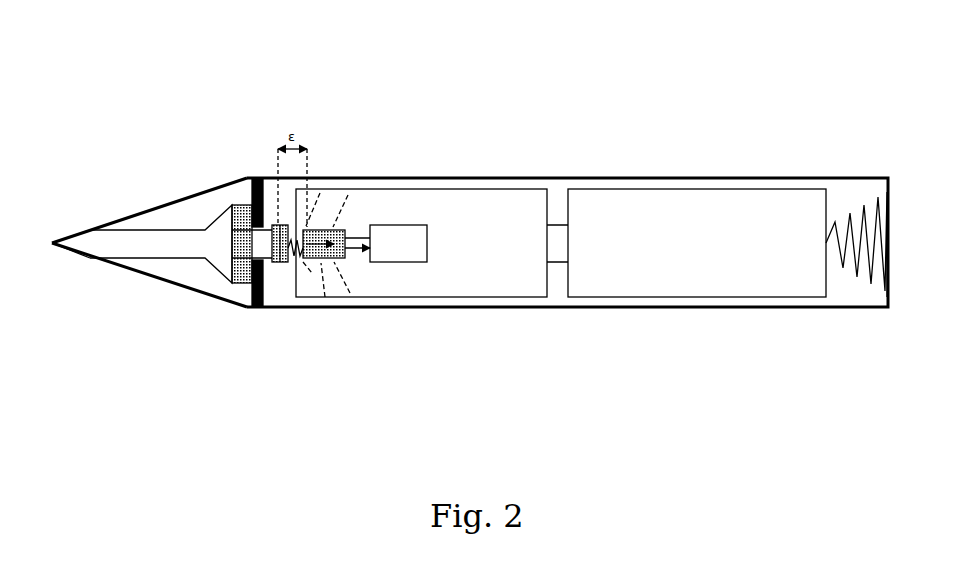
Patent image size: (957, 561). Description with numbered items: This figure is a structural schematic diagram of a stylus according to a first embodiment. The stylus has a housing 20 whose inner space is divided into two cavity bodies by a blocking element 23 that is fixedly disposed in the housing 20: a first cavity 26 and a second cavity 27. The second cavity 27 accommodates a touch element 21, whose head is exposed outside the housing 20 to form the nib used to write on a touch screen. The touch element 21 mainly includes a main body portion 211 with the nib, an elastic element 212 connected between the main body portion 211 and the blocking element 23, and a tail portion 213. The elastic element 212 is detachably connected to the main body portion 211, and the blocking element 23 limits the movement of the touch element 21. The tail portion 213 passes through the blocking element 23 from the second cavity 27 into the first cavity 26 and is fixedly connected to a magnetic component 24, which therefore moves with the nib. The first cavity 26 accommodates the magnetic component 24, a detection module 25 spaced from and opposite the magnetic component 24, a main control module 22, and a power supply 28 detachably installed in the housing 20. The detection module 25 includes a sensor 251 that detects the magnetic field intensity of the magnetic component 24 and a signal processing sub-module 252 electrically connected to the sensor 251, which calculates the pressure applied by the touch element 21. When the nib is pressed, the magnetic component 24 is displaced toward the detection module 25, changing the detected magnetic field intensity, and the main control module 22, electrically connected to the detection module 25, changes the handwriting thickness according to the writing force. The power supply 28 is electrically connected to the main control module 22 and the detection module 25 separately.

The housing 20 is at (753, 177).
The touch element 21 is at (166, 338).
The main body portion 211 is at (97, 240).
The elastic element 212 is at (258, 248).
The tail portion 213 is at (264, 306).
The main control module 22 is at (495, 207).
The blocking element 23 is at (263, 178).
The magnetic component 24 is at (281, 262).
The detection module 25 is at (417, 90).
The sensor 251 is at (326, 232).
The signal processing sub-module 252 is at (417, 225).
The first cavity 26 is at (563, 288).
The second cavity 27 is at (184, 215).
The power supply 28 is at (607, 203).